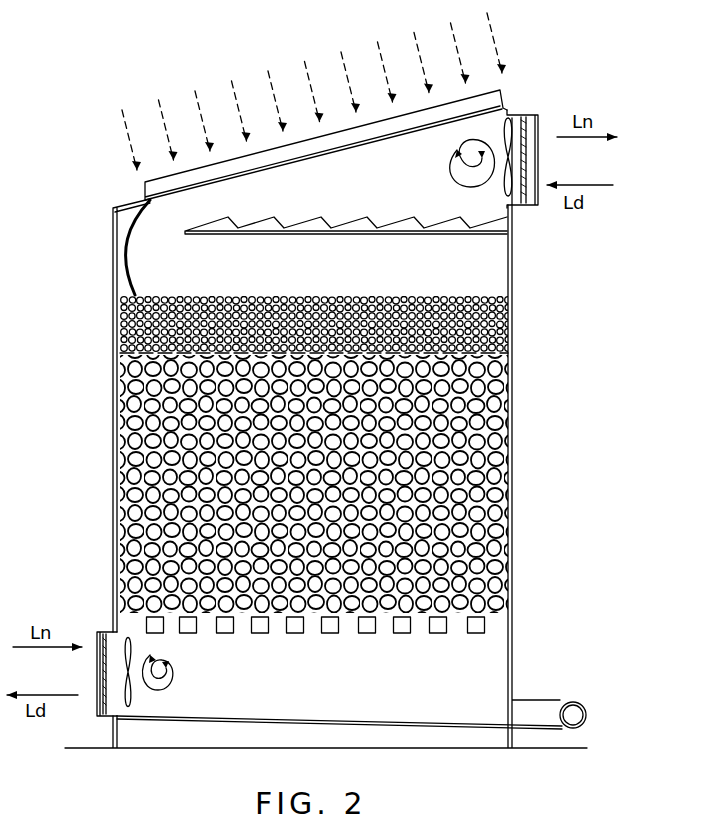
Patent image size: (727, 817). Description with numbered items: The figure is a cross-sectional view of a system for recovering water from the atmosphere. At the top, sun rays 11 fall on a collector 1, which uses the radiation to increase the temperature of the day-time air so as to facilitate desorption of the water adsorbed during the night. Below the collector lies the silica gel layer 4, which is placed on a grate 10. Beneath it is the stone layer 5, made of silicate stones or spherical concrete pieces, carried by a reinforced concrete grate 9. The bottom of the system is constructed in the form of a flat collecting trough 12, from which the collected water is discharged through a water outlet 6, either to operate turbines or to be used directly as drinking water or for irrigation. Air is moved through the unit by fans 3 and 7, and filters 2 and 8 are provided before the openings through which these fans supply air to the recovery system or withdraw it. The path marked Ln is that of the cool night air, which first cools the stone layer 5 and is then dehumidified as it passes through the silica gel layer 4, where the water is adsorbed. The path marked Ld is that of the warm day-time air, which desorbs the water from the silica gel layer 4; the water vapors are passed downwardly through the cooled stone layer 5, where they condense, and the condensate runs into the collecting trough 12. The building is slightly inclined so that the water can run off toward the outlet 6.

The collector 1 is at (480, 92).
The filter 2 is at (538, 127).
The fan 3 is at (512, 182).
The silica gel layer 4 is at (512, 337).
The stone layer 5 is at (497, 497).
The water outlet 6 is at (572, 702).
The fan 7 is at (130, 702).
The filter 8 is at (97, 700).
The reinforced concrete grate 9 is at (225, 618).
The grate 10 is at (162, 355).
The sun rays 11 is at (231, 97).
The flat collecting trough 12 is at (373, 698).